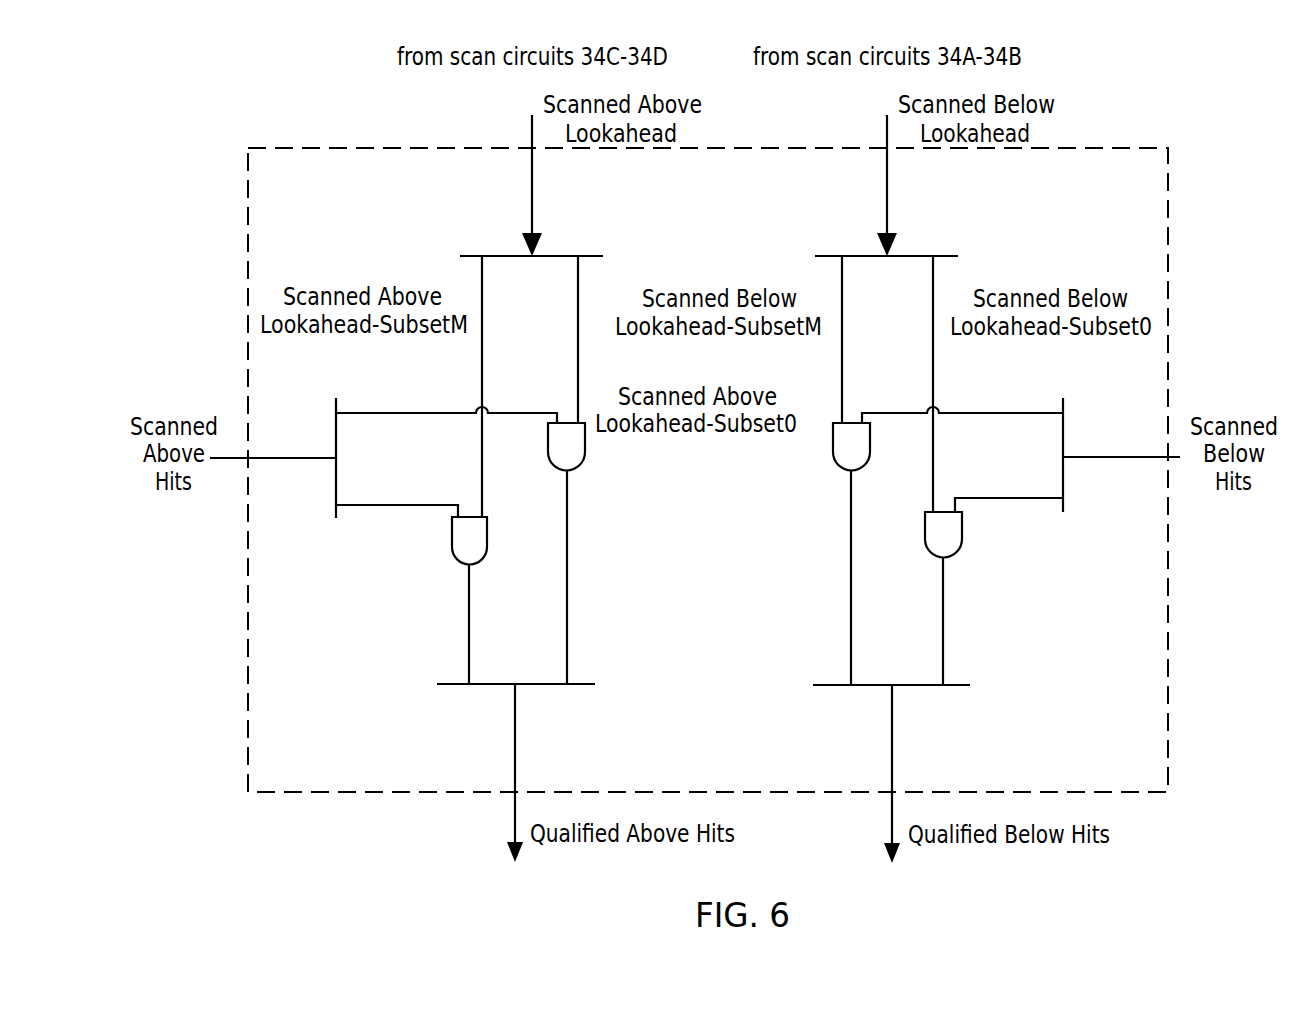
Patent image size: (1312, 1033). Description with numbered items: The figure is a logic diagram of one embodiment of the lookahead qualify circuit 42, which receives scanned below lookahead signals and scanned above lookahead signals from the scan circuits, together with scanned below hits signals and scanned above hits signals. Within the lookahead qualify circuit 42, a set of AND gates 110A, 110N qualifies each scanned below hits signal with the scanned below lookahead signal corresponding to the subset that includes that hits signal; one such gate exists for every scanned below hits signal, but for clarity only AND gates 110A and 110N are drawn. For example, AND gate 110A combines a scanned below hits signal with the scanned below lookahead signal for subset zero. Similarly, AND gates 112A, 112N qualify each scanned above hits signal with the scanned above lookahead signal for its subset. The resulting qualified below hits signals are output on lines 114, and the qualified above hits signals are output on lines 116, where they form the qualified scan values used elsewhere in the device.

The lookahead qualify circuit 42 is at (1093, 740).
The AND gate 110A is at (962, 527).
The AND gate 110N is at (833, 447).
The AND gate 112A is at (585, 440).
The AND gate 112N is at (452, 540).
The lines 114 is at (892, 755).
The lines 116 is at (515, 757).